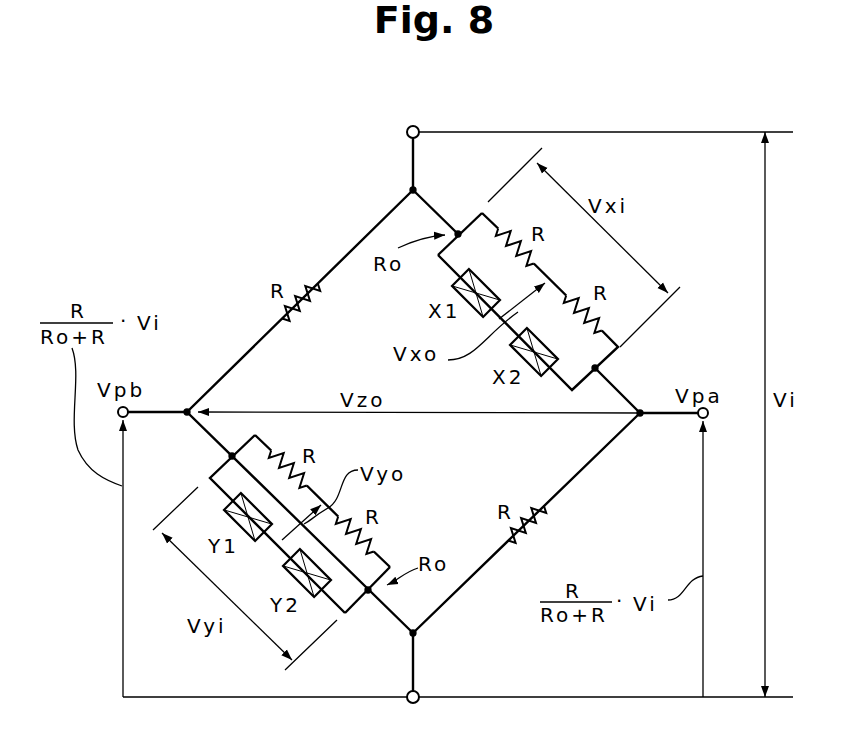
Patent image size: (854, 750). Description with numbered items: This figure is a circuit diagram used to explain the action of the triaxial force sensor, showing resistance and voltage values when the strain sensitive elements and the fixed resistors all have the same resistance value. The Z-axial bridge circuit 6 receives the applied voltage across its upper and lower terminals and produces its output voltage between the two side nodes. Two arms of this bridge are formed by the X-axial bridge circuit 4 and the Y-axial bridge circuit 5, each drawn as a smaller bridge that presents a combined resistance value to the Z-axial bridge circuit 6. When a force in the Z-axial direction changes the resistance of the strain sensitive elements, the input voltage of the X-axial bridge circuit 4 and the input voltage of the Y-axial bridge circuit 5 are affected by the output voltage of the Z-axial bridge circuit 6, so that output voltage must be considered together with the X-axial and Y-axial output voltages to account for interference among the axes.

The X-axial bridge circuit 4 is at (458, 229).
The Y-axial bridge circuit 5 is at (356, 613).
The Z-axial bridge circuit 6 is at (677, 207).